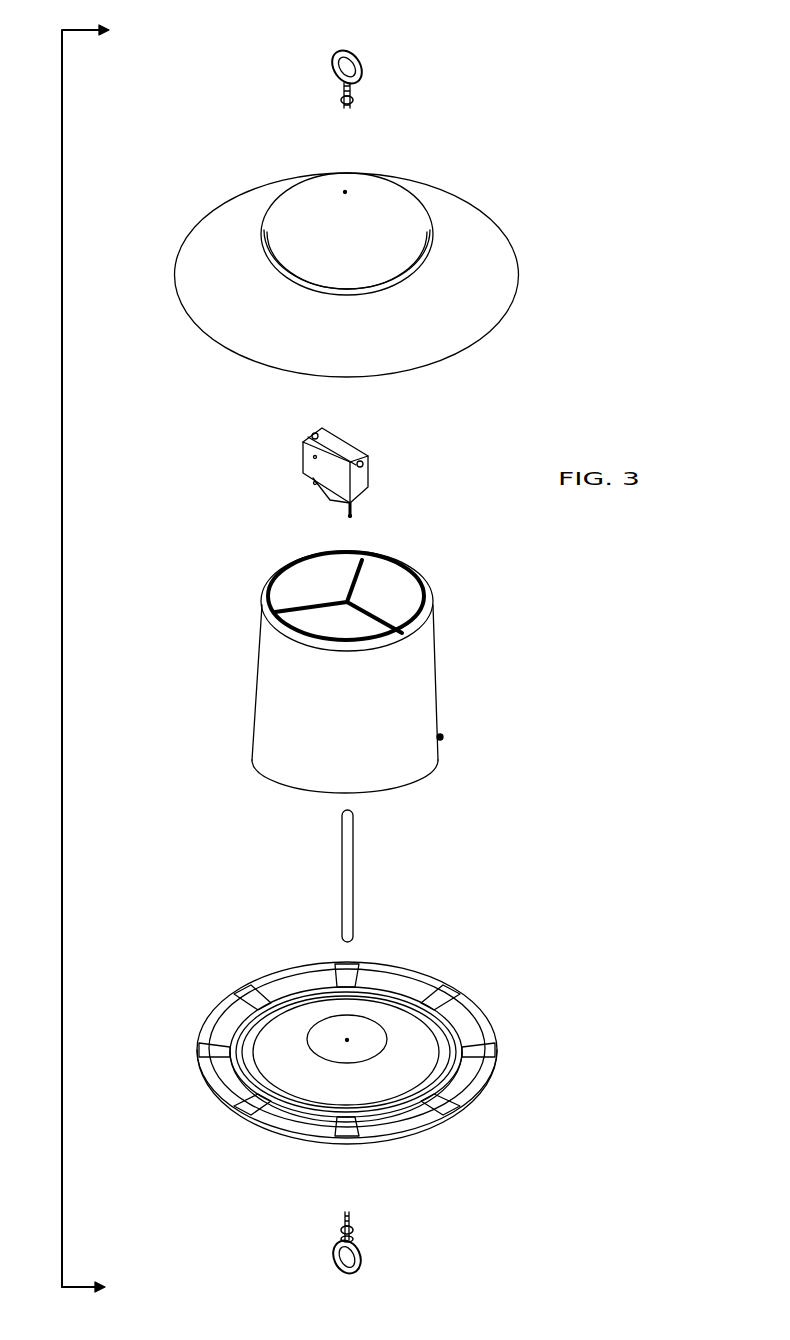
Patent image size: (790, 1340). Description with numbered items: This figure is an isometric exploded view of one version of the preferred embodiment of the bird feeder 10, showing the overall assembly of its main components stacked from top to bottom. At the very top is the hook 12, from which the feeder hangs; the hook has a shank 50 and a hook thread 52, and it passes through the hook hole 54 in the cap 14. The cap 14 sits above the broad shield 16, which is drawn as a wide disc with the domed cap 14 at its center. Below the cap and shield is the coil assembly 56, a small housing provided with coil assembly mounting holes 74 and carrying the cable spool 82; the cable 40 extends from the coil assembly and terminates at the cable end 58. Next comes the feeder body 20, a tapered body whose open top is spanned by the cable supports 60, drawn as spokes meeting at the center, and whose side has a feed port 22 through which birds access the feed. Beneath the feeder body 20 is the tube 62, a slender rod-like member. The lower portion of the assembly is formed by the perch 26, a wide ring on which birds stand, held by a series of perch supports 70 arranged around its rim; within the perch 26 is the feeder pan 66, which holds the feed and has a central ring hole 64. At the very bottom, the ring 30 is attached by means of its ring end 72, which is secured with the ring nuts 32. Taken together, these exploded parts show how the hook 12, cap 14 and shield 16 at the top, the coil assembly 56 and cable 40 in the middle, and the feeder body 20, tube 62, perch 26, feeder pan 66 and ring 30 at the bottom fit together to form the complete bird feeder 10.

The bird feeder 10 is at (61, 687).
The hook 12 is at (355, 60).
The shank 50 is at (343, 90).
The hook thread 52 is at (353, 101).
The hook hole 54 is at (346, 192).
The cap 14 is at (403, 228).
The shield 16 is at (488, 274).
The coil assembly mounting holes 74 is at (360, 463).
The coil assembly 56 is at (296, 456).
The cable spool 82 is at (327, 497).
The cable 40 is at (352, 505).
The cable end 58 is at (347, 513).
The cable supports 60 is at (293, 603).
The feeder body 20 is at (428, 687).
The feed port 22 is at (441, 747).
The tube 62 is at (353, 878).
The perch supports 70 is at (267, 1010).
The ring hole 64 is at (347, 1040).
The perch 26 is at (488, 1027).
The feeder pan 66 is at (290, 1072).
The ring end 72 is at (343, 1212).
The ring nuts 32 is at (355, 1240).
The ring 30 is at (357, 1260).